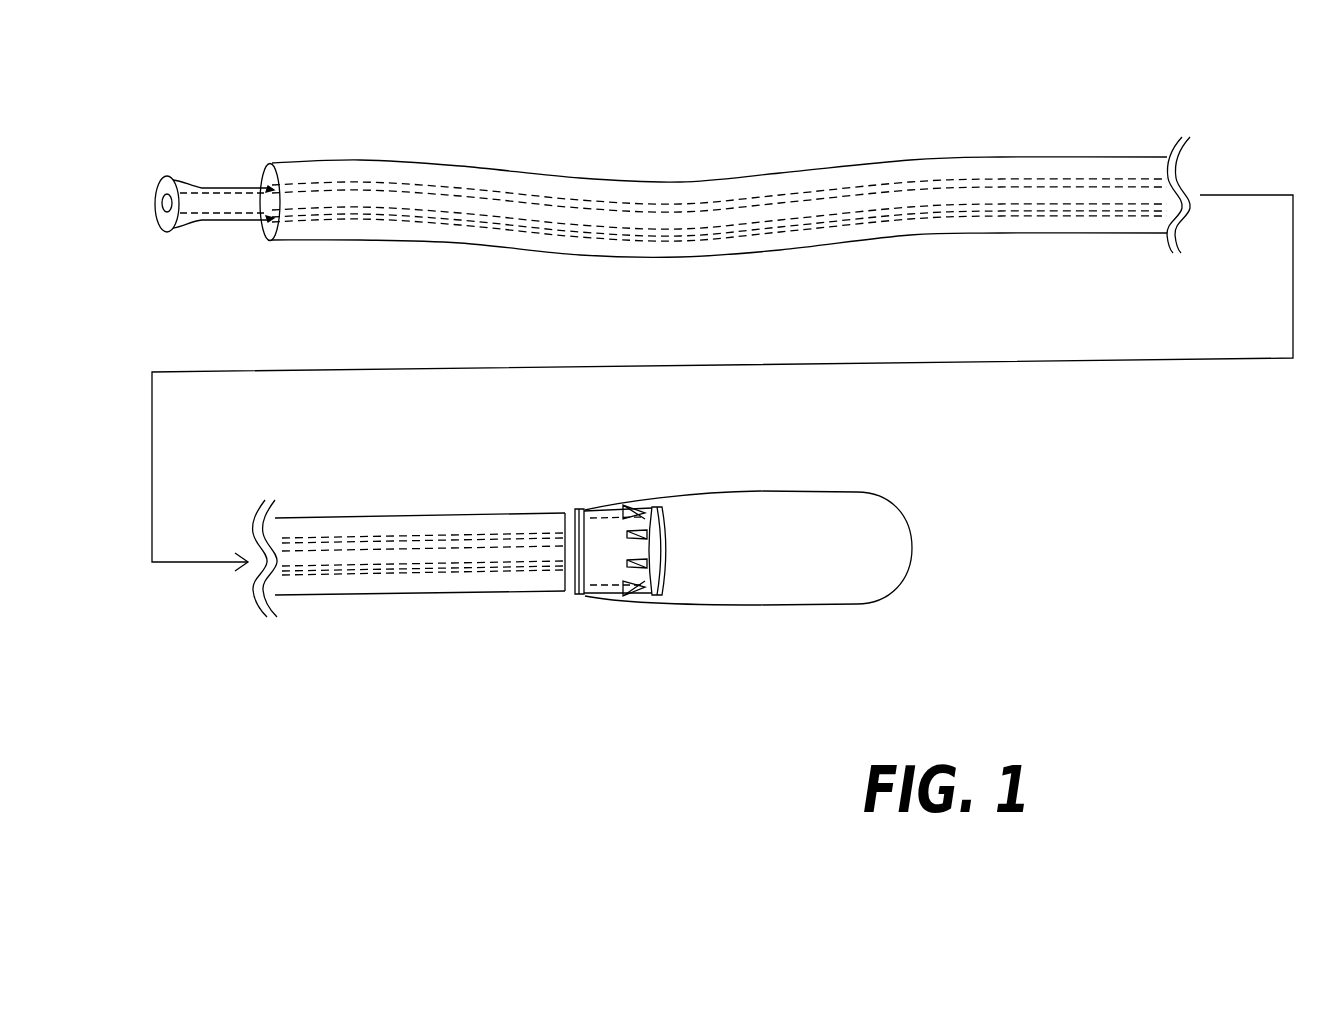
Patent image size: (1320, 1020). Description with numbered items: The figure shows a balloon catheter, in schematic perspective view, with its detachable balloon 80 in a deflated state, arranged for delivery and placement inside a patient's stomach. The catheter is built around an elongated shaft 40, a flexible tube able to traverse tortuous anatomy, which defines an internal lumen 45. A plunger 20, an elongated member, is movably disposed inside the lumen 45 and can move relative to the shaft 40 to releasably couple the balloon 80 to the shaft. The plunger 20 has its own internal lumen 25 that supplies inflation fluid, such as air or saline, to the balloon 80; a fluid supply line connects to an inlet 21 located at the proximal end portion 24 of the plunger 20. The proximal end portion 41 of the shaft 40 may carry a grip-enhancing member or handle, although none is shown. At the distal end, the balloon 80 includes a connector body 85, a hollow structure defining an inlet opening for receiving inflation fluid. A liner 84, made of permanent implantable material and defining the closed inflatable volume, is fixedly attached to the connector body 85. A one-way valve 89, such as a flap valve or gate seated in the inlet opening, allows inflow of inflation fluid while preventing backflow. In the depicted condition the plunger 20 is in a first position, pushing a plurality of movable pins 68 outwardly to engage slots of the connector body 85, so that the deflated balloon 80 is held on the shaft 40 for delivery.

The plunger 20 is at (215, 182).
The inlet 21 is at (165, 203).
The proximal end portion of plunger 24 is at (180, 178).
The internal lumen of plunger 25 is at (254, 200).
The elongated shaft 40 is at (722, 337).
The proximal end portion of shaft 41 is at (287, 174).
The internal lumen of shaft 45 is at (983, 178).
The movable pins 68 is at (630, 508).
The balloon 80 is at (748, 580).
The liner 84 is at (873, 510).
The connector body 85 is at (608, 570).
The one-way valve 89 is at (661, 597).